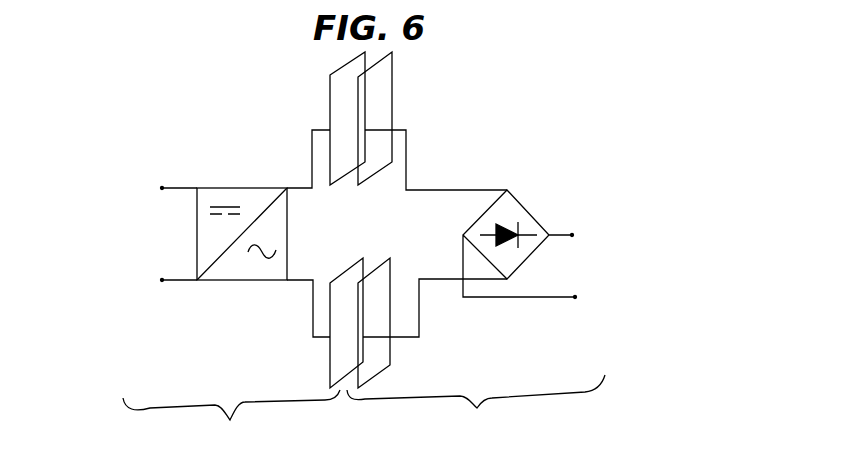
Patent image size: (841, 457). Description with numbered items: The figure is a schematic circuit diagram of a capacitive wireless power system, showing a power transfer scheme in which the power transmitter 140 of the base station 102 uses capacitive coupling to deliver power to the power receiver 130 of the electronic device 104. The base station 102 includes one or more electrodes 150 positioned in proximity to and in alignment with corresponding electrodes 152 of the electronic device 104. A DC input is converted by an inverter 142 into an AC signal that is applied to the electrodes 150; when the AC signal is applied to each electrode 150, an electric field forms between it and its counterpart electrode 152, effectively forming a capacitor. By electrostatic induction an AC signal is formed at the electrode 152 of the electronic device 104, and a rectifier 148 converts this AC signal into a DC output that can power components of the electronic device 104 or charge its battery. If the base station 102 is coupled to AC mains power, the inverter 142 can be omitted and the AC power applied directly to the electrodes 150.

The base station 102 is at (122, 167).
The electronic device 104 is at (605, 161).
The inverter 142 is at (250, 200).
The rectifier 148 is at (507, 210).
The electrodes 150 is at (343, 113).
The electrodes 152 is at (382, 105).
The power transmitter 140 is at (231, 417).
The power receiver 130 is at (476, 405).